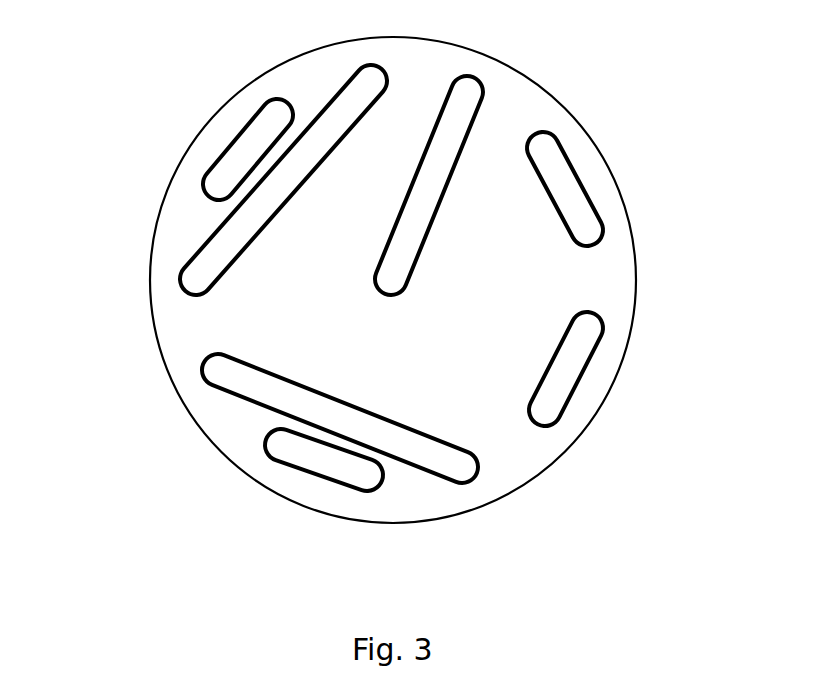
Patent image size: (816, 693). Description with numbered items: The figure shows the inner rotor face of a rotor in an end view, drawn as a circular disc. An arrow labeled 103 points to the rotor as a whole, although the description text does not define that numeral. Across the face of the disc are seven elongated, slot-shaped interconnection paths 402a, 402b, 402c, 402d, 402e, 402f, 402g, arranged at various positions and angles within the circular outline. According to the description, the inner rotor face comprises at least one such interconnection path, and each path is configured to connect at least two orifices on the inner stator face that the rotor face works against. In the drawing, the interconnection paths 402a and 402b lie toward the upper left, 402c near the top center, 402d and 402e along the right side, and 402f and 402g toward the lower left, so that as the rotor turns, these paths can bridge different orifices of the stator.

The rotor disc 103 is at (110, 117).
The interconnection path 402a is at (265, 103).
The interconnection path 402b is at (367, 63).
The interconnection path 402c is at (468, 93).
The interconnection path 402d is at (563, 148).
The interconnection path 402e is at (592, 330).
The interconnection path 402f is at (280, 373).
The interconnection path 402g is at (272, 458).